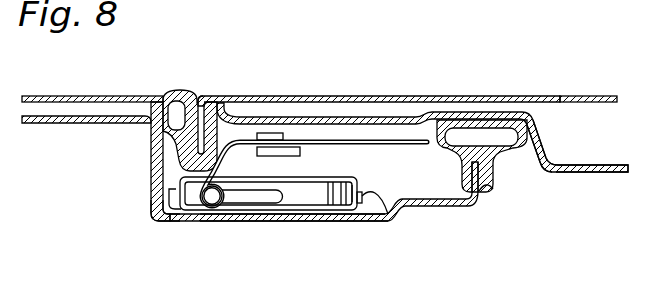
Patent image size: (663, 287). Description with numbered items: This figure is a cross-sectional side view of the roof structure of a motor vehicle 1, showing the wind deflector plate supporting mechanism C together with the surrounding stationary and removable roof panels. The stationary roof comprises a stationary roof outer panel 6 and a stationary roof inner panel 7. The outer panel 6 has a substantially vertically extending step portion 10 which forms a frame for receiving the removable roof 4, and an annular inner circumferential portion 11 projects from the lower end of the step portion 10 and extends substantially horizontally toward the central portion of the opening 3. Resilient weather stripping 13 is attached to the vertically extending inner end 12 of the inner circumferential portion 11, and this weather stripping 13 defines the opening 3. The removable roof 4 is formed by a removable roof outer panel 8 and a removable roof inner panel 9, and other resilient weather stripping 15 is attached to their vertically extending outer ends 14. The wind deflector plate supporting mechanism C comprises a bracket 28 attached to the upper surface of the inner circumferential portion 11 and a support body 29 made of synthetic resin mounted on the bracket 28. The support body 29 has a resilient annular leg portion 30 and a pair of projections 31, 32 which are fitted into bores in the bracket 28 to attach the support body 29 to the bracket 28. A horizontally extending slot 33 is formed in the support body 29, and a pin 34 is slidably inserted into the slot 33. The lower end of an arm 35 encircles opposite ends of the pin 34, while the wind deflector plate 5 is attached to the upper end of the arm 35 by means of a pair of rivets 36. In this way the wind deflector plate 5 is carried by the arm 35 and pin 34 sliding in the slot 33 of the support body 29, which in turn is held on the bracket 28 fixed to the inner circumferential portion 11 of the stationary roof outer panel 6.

The vehicle body assembly 1 is at (78, 96).
The opening 3 is at (566, 174).
The removable roof 4 is at (506, 95).
The wind deflector plate 5 is at (347, 139).
The stationary roof outer panel 6 is at (113, 95).
The stationary roof inner panel 7 is at (73, 125).
The removable roof outer panel 8 is at (576, 95).
The removable roof inner panel 9 is at (606, 173).
The step portion 10 is at (155, 100).
The inner circumferential portion 11 is at (240, 212).
The inner end 12 is at (493, 197).
The weather stripping 13 is at (495, 173).
The outer ends 14 is at (222, 103).
The weather stripping 15 is at (181, 97).
The bracket 28 is at (320, 206).
The support body 29 is at (300, 192).
The resilient annular leg portion 30 is at (332, 177).
The projection 31 is at (387, 213).
The projection 32 is at (153, 211).
The slot 33 is at (233, 194).
The pin 34 is at (193, 220).
The arm 35 is at (248, 185).
The rivets 36 is at (271, 133).
The wind deflector plate supporting mechanism C is at (337, 223).